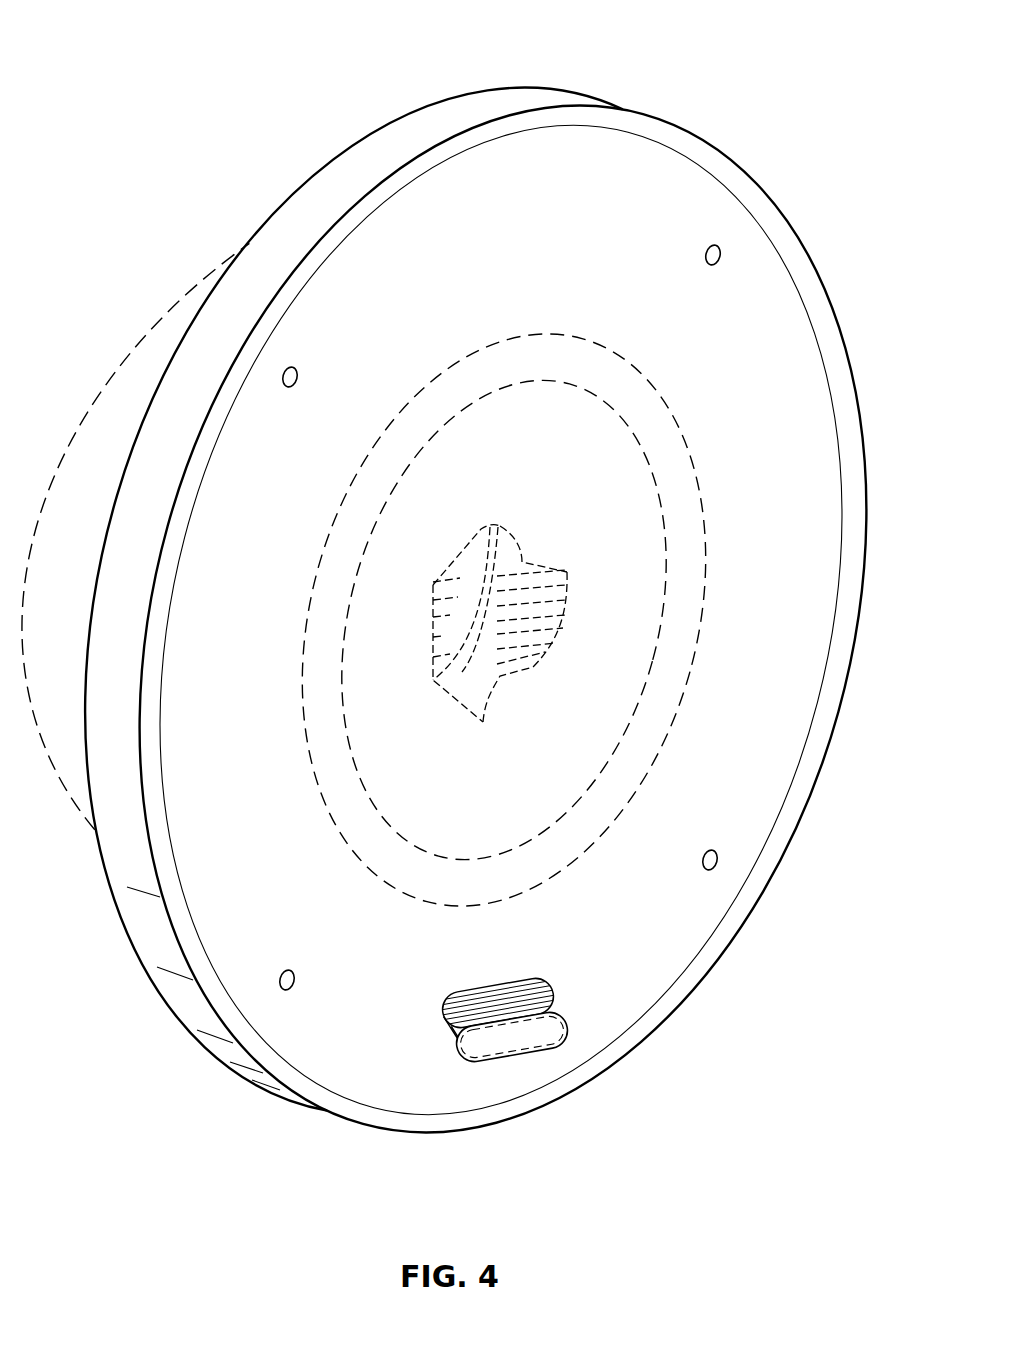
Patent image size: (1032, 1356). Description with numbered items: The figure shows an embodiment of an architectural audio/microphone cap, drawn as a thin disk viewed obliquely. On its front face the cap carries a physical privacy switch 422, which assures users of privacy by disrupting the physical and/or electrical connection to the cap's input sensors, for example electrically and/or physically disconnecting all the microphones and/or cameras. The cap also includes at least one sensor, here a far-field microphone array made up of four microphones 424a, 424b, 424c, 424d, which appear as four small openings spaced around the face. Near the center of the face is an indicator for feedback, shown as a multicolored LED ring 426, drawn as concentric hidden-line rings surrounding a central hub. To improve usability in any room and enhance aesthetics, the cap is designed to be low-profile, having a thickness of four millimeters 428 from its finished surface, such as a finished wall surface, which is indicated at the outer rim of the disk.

The privacy switch 422 is at (522, 1057).
The microphone 424a is at (722, 250).
The microphone 424b is at (719, 863).
The microphone 424c is at (278, 983).
The microphone 424d is at (289, 364).
The multicolored LED ring 426 is at (470, 350).
The thickness of 4 mm 428 is at (548, 88).